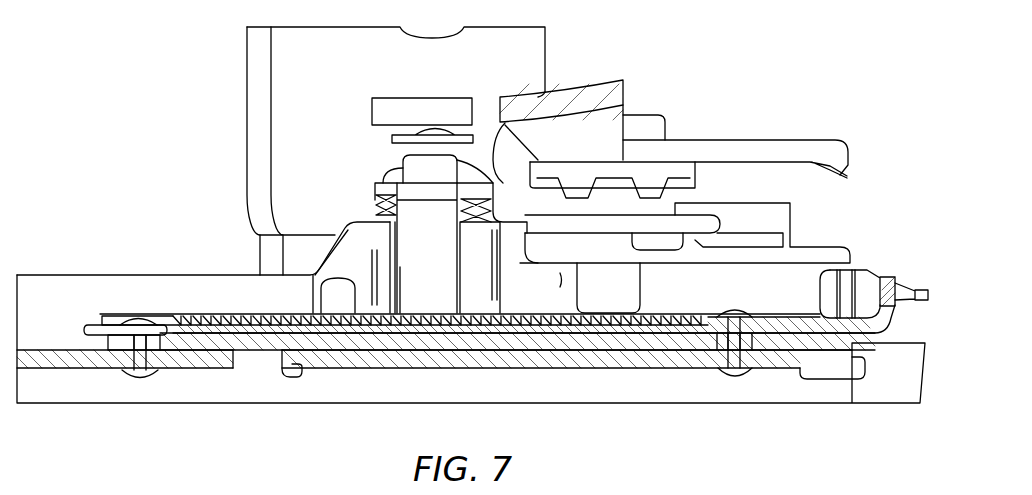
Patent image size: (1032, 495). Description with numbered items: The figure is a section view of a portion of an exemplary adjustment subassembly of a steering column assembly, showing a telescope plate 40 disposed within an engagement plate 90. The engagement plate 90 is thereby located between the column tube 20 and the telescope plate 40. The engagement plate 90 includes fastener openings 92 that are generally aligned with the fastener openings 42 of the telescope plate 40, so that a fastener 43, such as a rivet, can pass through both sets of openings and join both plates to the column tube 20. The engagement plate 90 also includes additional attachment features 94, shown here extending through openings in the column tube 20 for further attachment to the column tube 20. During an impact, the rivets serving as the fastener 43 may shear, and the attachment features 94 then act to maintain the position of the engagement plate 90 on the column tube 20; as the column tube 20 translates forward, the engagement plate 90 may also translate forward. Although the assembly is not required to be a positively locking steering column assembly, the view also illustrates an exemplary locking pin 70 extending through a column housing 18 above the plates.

The column housing 18 is at (343, 262).
The column tube 20 is at (68, 342).
The telescope plate 40 is at (248, 332).
The fastener openings 42 is at (115, 332).
The fastener 43 is at (140, 377).
The locking pin 70 is at (409, 218).
The engagement plate 90 is at (190, 340).
The fastener openings 92 is at (127, 347).
The attachment features 94 is at (278, 368).